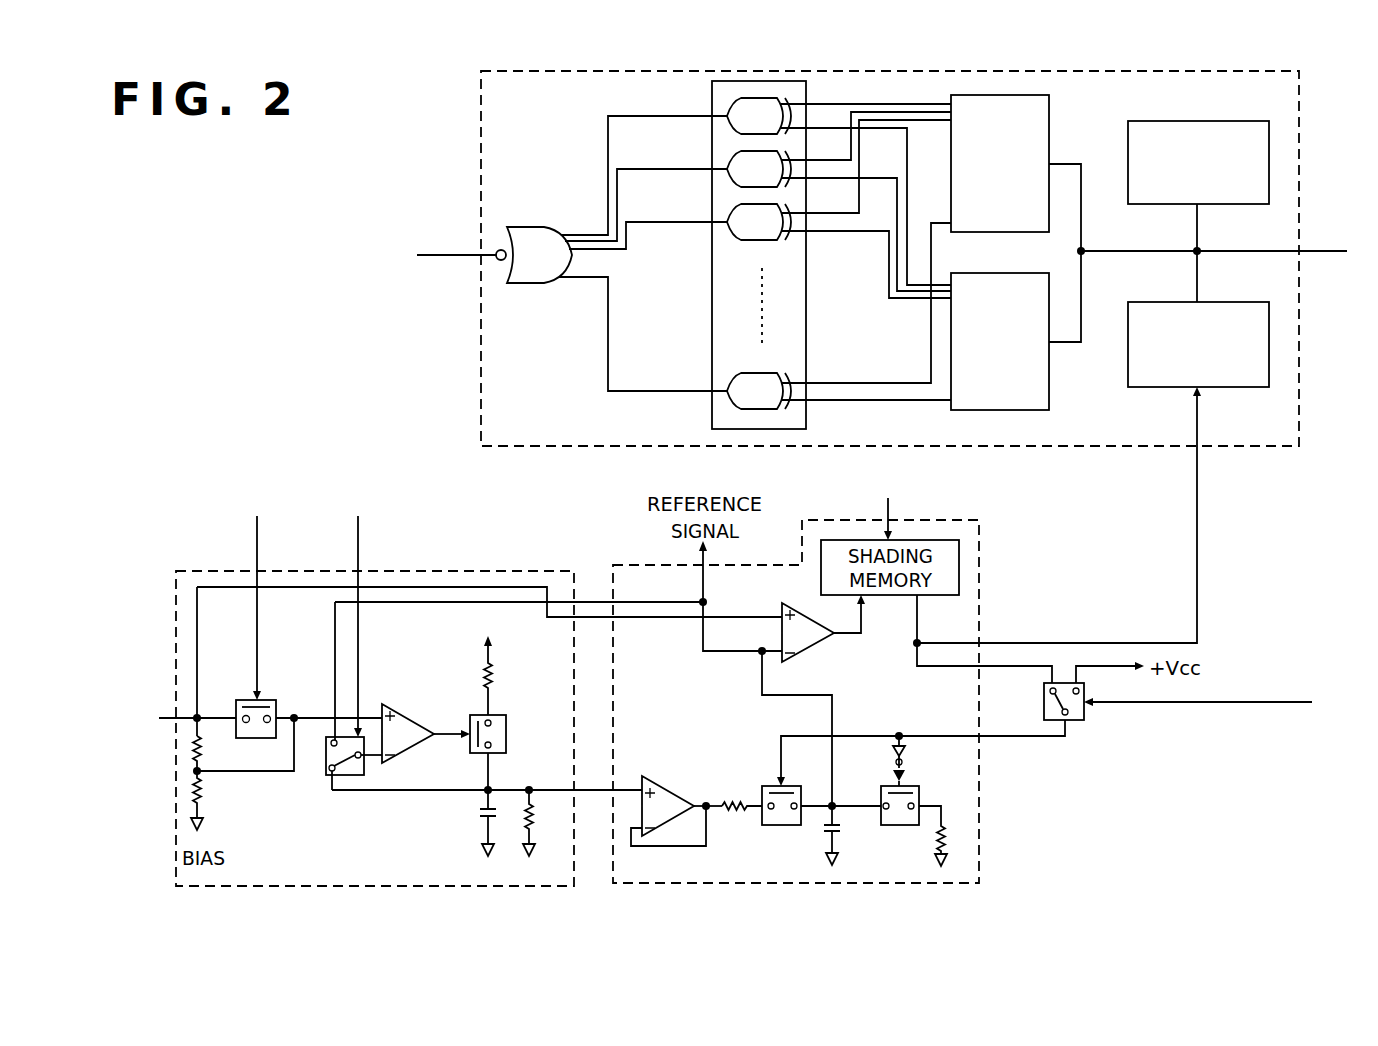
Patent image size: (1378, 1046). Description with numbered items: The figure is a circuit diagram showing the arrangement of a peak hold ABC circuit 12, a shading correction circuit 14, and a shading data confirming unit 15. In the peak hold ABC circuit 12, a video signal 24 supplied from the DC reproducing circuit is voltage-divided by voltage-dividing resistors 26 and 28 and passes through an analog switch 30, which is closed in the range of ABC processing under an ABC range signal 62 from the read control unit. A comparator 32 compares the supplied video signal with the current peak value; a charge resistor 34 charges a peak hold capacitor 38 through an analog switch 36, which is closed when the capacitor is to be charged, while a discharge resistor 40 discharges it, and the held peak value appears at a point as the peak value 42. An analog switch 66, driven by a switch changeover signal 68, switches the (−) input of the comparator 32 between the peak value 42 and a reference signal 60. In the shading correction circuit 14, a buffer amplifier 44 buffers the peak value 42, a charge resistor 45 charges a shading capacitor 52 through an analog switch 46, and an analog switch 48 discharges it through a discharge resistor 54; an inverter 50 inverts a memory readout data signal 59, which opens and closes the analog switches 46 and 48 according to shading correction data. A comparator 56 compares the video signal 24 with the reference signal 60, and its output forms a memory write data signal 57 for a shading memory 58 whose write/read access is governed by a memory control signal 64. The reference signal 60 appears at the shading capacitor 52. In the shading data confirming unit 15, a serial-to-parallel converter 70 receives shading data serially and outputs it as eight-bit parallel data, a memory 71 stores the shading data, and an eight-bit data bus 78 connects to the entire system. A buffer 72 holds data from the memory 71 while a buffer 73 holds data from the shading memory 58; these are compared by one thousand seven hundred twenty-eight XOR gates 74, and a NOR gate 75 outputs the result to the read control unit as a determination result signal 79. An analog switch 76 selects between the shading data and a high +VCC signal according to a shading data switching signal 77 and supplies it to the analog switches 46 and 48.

The peak hold ABC circuit 12 is at (455, 573).
The shading correction circuit 14 is at (813, 524).
The shading data confirming unit 15 is at (480, 182).
The video signal 24 is at (138, 700).
The voltage-dividing resistor 26 is at (205, 750).
The voltage-dividing resistor 28 is at (205, 796).
The analog switch 30 is at (277, 702).
The comparator 32 is at (401, 717).
The charge resistor 34 is at (496, 678).
The analog switch 36 is at (507, 736).
The peak hold capacitor 38 is at (482, 818).
The discharge resistor 40 is at (534, 826).
The peak value 42 is at (532, 790).
The buffer amplifier 44 is at (667, 789).
The charge resistor 45 is at (733, 815).
The analog switch 46 is at (768, 787).
The analog switch 48 is at (880, 788).
The inverter 50 is at (906, 760).
The shading capacitor 52 is at (826, 836).
The discharge resistor 54 is at (938, 838).
The comparator 56 is at (808, 652).
The memory write data signal 57 is at (864, 631).
The shading memory 58 is at (930, 599).
The memory readout data signal 59 is at (948, 668).
The reference signal 60 is at (712, 603).
The ABC range signal 62 is at (257, 558).
The memory control signal 64 is at (896, 510).
The analog switch 66 is at (352, 780).
The switch changeover signal 68 is at (357, 560).
The serial-to-parallel converter 70 is at (1210, 304).
The memory 71 is at (1188, 123).
The buffer 72 is at (1050, 136).
The buffer 73 is at (1050, 376).
The XOR gates 74 is at (713, 110).
The NOR gate 75 is at (527, 235).
The analog switch 76 is at (1080, 723).
The shading data switching signal 77 is at (1255, 703).
The 8-bit data bus 78 is at (1300, 250).
The determination result signal 79 is at (450, 257).